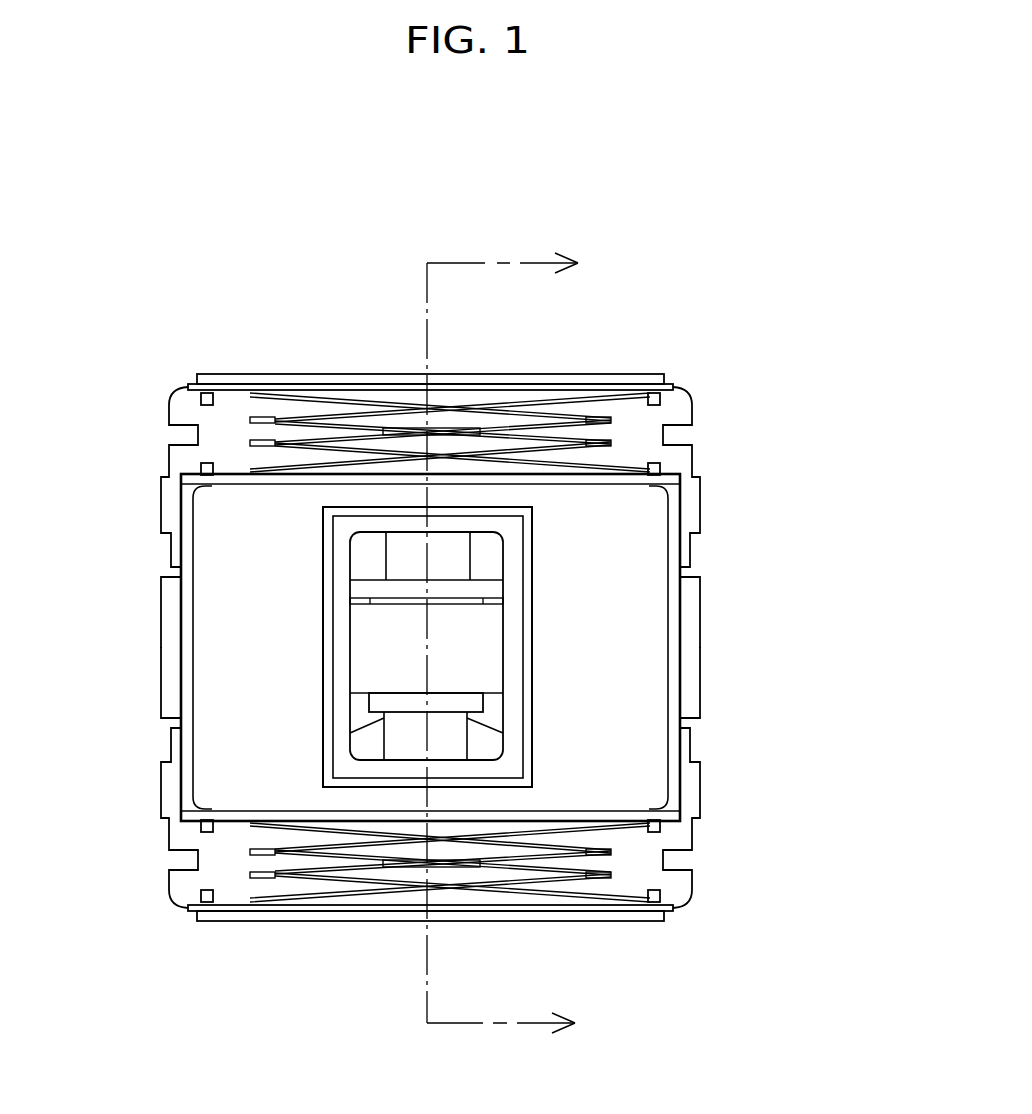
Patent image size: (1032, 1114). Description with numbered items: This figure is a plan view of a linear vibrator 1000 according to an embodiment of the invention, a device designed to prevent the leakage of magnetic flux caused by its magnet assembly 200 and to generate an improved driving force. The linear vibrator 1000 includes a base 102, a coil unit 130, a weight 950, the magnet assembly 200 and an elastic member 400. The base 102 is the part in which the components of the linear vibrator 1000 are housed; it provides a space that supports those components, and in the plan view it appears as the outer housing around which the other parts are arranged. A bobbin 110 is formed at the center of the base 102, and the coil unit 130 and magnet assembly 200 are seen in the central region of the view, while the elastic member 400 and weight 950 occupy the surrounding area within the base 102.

The linear vibrator 1000 is at (717, 178).
The base 102 is at (696, 895).
The weight 950 is at (638, 567).
The elastic member 400 is at (633, 420).
The magnet assembly 200 is at (320, 542).
The coil unit 130 is at (350, 653).
The bobbin 110 is at (483, 703).